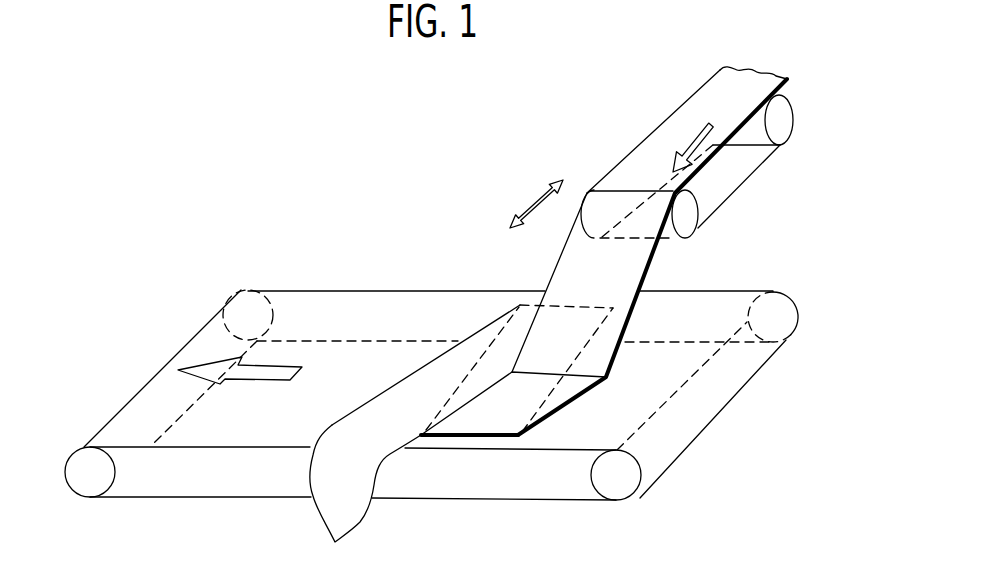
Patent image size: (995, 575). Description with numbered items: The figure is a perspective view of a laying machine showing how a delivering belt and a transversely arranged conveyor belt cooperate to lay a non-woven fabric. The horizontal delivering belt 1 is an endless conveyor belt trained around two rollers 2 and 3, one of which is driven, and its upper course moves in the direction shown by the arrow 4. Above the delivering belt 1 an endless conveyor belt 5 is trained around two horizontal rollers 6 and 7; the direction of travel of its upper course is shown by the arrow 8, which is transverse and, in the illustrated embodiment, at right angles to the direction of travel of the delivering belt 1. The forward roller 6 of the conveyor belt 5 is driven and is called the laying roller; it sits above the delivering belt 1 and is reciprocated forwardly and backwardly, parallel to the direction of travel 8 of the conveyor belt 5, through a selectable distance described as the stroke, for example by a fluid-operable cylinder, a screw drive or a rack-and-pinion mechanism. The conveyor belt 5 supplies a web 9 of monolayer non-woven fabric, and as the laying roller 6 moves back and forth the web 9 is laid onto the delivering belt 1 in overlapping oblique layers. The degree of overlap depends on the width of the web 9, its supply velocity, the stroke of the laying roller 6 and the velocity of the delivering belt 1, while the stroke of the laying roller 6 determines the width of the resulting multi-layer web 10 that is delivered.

The delivering belt 1 is at (362, 291).
The roller 2 is at (78, 473).
The roller 3 is at (630, 483).
The arrow 4 is at (260, 381).
The conveyor belt 5 is at (757, 173).
The laying roller 6 is at (705, 234).
The roller 7 is at (788, 127).
The arrow 8 is at (687, 140).
The web 9 is at (649, 267).
The multi-layer web 10 is at (473, 437).